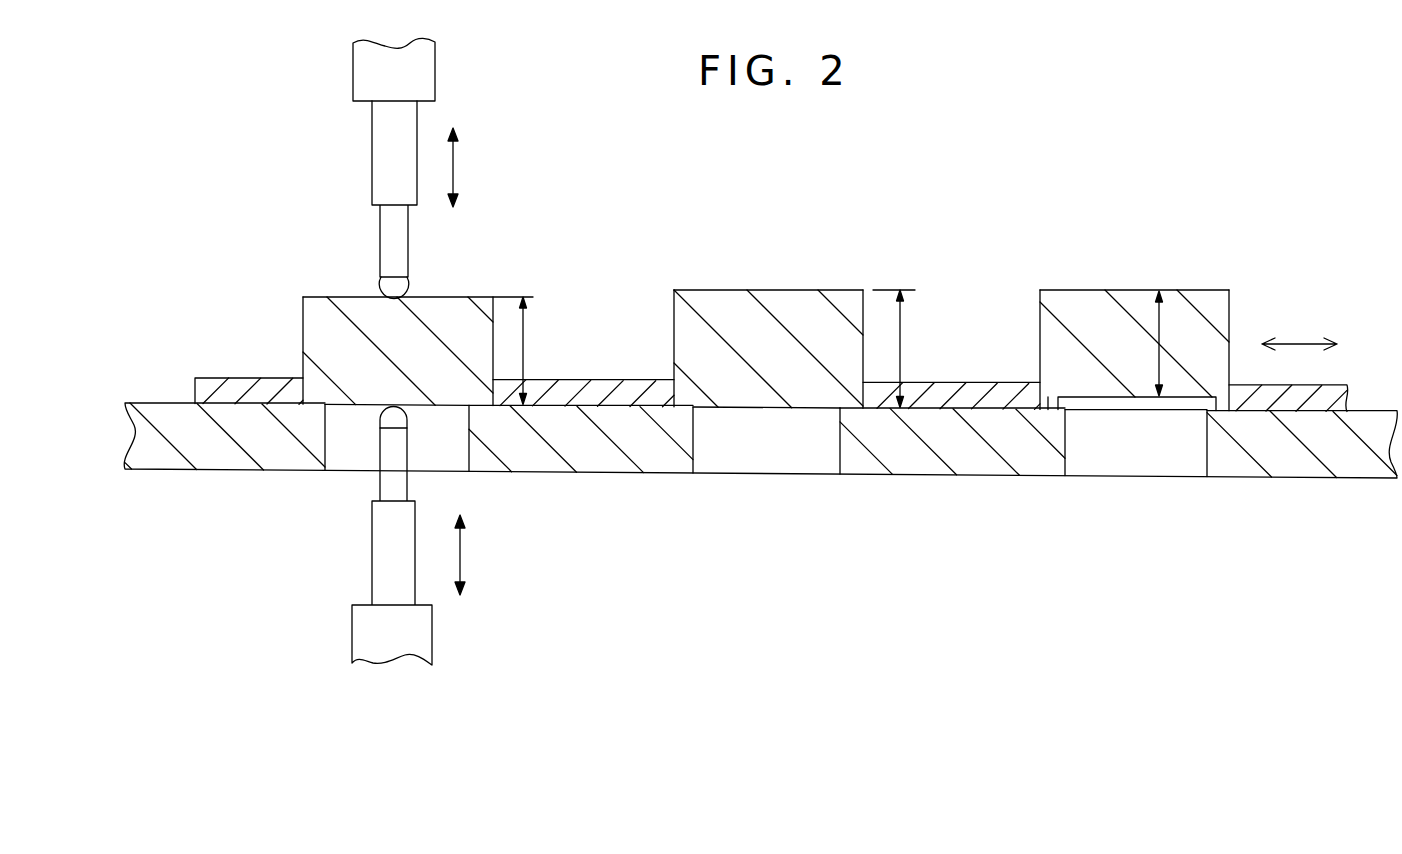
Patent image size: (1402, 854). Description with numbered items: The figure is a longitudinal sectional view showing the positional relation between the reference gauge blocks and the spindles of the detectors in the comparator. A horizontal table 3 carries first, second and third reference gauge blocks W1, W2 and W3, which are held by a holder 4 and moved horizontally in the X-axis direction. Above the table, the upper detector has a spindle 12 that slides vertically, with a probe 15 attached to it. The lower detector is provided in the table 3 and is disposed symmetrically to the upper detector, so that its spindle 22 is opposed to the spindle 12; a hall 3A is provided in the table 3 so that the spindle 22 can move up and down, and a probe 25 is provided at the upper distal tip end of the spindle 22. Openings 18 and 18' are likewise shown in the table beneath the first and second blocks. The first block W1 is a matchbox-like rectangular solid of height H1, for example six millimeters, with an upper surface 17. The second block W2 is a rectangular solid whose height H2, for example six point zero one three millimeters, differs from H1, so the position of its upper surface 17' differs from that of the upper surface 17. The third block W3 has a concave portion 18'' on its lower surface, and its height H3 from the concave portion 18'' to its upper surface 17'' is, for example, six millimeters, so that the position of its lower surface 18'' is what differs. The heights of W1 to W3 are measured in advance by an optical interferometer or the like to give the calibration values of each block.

The table 3 is at (601, 473).
The hall 3A is at (469, 440).
The holder 4 is at (237, 382).
The spindle 12 is at (383, 232).
The probe 15 is at (400, 297).
The upper surface 17 is at (449, 258).
The upper surface 17' is at (794, 251).
The upper surface 17'' is at (1150, 252).
The through hole in base plate 18 is at (330, 477).
The through hole in base plate 18' is at (766, 494).
The concave portion 18'' is at (1109, 495).
The spindle 22 is at (380, 453).
The probe 25 is at (393, 405).
The first reference gauge block W1 is at (325, 309).
The second reference gauge block W2 is at (740, 300).
The third reference gauge block W3 is at (1085, 298).
The height H1 is at (545, 351).
The height H2 is at (920, 349).
The height H3 is at (1184, 343).